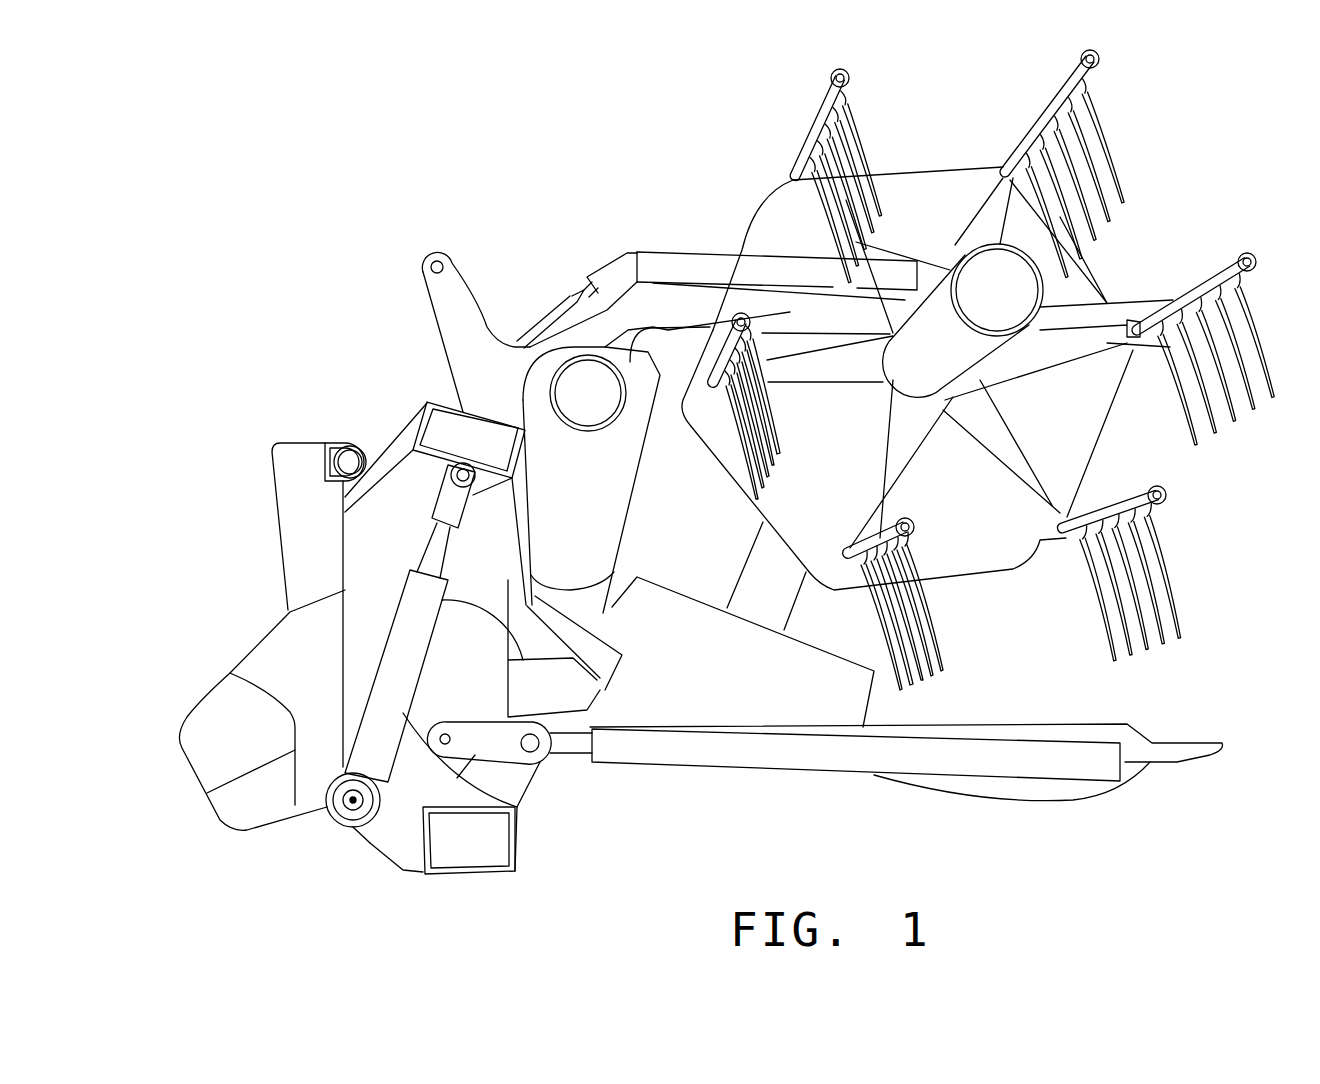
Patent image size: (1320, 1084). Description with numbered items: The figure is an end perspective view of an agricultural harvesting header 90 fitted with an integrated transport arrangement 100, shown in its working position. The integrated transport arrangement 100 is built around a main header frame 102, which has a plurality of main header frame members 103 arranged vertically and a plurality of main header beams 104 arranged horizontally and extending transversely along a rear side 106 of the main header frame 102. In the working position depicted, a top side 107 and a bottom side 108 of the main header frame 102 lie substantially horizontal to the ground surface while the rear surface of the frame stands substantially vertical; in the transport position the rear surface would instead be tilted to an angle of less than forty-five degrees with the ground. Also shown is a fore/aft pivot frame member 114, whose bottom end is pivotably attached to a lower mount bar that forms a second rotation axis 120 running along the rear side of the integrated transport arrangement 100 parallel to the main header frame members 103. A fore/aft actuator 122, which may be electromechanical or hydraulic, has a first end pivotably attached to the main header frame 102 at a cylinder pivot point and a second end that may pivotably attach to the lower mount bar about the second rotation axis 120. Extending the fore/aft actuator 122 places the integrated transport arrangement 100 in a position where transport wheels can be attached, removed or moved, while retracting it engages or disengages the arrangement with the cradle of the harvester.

The agricultural harvesting header 90 is at (1180, 178).
The integrated transport arrangement 100 is at (246, 405).
The main header frame 102 is at (395, 835).
The main header frame members 103 is at (480, 407).
The main header beams 104 is at (343, 575).
The rear side 106 is at (350, 445).
The top side 107 is at (425, 400).
The bottom side 108 is at (426, 872).
The fore/aft pivot frame member 114 is at (207, 793).
The second rotation axis 120 is at (352, 800).
The fore/aft actuator 122 is at (370, 693).